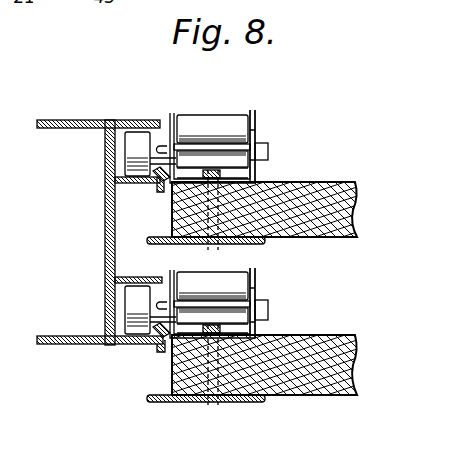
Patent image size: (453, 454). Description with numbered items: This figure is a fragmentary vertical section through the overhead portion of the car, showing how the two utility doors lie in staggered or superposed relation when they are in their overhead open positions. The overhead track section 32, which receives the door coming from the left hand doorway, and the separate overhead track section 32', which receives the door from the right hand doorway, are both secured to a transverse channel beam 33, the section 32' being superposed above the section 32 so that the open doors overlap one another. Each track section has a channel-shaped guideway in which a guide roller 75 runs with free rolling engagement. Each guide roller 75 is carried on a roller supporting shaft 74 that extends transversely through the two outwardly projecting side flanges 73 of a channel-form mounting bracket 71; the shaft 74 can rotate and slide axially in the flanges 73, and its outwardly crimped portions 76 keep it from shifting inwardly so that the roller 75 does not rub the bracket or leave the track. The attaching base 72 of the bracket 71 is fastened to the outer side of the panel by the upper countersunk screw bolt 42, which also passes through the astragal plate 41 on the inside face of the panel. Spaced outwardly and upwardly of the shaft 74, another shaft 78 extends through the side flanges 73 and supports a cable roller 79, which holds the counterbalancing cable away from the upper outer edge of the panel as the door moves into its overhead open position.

The overhead track section 32 is at (101, 358).
The overhead track section 32' is at (98, 108).
The transverse channel beam 33 is at (106, 236).
The astragal plate 41 is at (155, 244).
The screw bolt 42 is at (203, 418).
The mounting bracket 71 is at (262, 135).
The attaching base 72 is at (245, 338).
The side flange 73 is at (171, 112).
The roller supporting shaft 74 is at (269, 150).
The guide roller 75 is at (127, 151).
The outwardly crimped portion 76 is at (137, 184).
The shaft 78 is at (259, 133).
The cable roller 79 is at (203, 116).